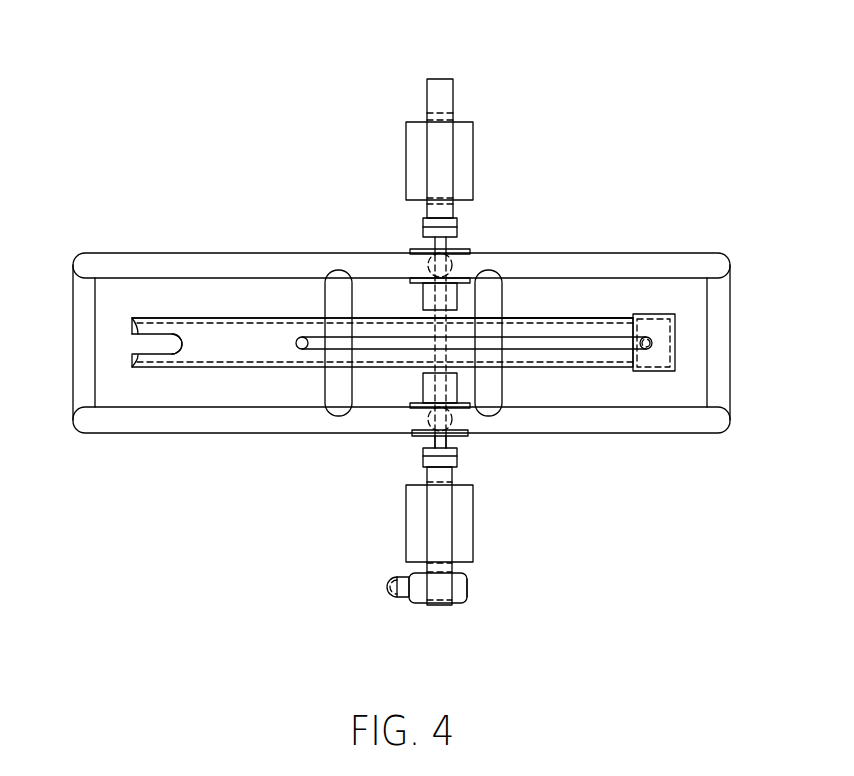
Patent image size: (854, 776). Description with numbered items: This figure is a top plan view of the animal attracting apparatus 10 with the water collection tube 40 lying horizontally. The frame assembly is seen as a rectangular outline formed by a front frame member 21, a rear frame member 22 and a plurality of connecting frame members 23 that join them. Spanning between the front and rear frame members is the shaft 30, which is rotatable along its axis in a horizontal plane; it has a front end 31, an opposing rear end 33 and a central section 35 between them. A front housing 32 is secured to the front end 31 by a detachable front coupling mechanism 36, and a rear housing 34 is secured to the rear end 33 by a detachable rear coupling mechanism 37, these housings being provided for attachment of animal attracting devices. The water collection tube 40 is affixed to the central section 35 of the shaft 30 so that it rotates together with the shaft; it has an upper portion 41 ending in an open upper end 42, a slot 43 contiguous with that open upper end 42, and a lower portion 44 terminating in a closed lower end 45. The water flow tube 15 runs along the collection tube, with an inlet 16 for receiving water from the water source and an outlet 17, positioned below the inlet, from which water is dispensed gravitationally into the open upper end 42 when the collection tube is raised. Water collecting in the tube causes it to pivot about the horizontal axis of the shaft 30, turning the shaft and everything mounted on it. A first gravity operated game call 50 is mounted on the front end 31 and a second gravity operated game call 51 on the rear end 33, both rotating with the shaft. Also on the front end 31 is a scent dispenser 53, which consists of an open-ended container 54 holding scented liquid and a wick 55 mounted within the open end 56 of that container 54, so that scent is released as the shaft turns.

The animal attracting apparatus 10 is at (245, 80).
The water flow tube 15 is at (572, 345).
The inlet 16 is at (647, 350).
The outlet 17 is at (300, 343).
The front frame member 21 is at (637, 437).
The rear frame member 22 is at (637, 249).
The connecting frame members 23 is at (335, 297).
The shaft 30 is at (432, 297).
The front end 31 is at (435, 442).
The front housing 32 is at (440, 614).
The rear end 33 is at (448, 243).
The rear housing 34 is at (440, 76).
The central section 35 is at (425, 343).
The detachable front coupling mechanism 36 is at (461, 457).
The detachable rear coupling mechanism 37 is at (420, 226).
The water collection tube 40 is at (228, 315).
The upper portion 41 is at (158, 318).
The open upper end 42 is at (132, 343).
The slot 43 is at (170, 352).
The lower portion 44 is at (608, 320).
The closed lower end 45 is at (677, 342).
The first gravity operated game call 50 is at (476, 520).
The second gravity operated game call 51 is at (476, 165).
The scent dispenser 53 is at (471, 592).
The open-ended container 54 is at (457, 595).
The wick 55 is at (388, 585).
The open end 56 is at (400, 598).